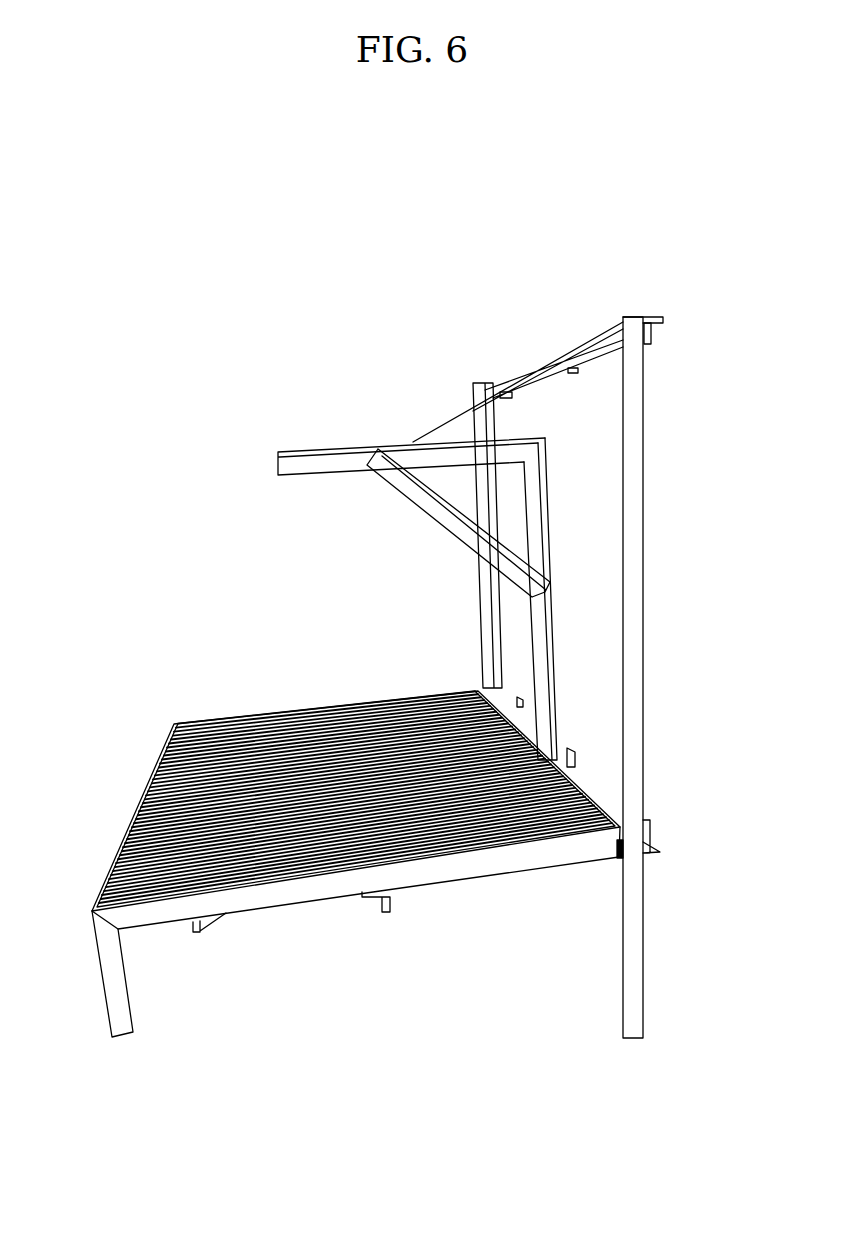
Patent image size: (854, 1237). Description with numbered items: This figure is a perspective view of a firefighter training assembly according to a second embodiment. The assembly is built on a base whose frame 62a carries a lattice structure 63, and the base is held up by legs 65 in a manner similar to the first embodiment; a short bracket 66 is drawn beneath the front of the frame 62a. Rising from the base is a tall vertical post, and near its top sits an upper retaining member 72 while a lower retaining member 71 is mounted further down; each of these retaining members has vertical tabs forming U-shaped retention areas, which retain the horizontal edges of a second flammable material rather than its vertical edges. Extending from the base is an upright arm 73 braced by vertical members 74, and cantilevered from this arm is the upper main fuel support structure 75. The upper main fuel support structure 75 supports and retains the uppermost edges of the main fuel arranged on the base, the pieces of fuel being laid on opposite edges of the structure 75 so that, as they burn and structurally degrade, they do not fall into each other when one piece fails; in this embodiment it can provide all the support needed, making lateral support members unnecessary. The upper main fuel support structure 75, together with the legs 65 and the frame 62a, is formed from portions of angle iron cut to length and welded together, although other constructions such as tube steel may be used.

The frame 62a is at (210, 892).
The lattice structure 63 is at (206, 762).
The legs 65 is at (645, 938).
The bracket 66 is at (345, 918).
The lower retaining member 71 is at (672, 815).
The upper retaining member 72 is at (666, 336).
The support arm 73 is at (586, 609).
The vertical member 74 is at (458, 640).
The upper main fuel support structure 75 is at (263, 467).